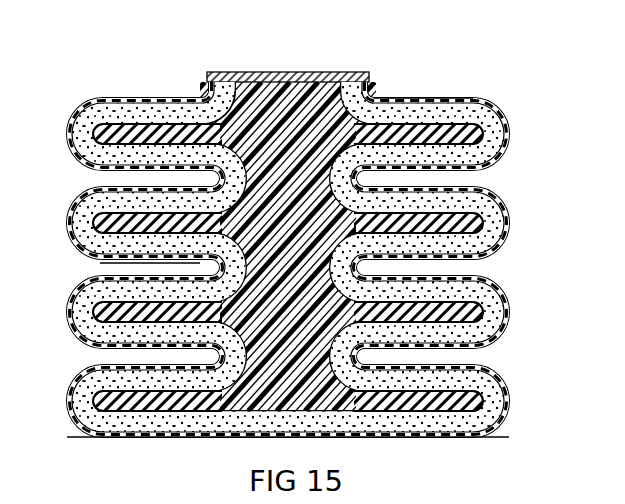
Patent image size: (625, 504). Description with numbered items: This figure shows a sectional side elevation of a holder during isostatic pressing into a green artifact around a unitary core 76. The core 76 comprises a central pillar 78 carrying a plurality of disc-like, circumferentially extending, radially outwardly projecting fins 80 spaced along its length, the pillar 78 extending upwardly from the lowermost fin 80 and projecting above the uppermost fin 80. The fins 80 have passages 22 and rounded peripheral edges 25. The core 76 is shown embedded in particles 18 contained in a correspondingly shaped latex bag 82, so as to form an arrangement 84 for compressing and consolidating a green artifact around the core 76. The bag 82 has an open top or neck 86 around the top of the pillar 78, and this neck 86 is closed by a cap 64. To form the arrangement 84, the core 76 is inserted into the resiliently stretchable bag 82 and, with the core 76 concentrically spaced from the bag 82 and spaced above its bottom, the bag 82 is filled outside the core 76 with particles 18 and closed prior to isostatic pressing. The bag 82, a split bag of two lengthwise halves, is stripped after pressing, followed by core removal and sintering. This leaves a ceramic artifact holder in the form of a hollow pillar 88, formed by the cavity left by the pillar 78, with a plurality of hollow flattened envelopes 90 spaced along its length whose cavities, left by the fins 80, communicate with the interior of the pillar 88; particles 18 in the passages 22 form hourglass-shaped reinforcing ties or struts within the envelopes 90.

The particles 18 is at (138, 388).
The passages 22 is at (390, 137).
The rounded peripheral edges 25 is at (100, 228).
The cap 64 is at (276, 95).
The core 76 is at (268, 411).
The pillar 78 is at (308, 98).
The fins 80 is at (120, 128).
The latex bag 82 is at (505, 226).
The arrangement 84 is at (468, 62).
The neck 86 is at (250, 110).
The hollow pillar 88 is at (318, 253).
The hollow flattened envelopes 90 is at (115, 288).